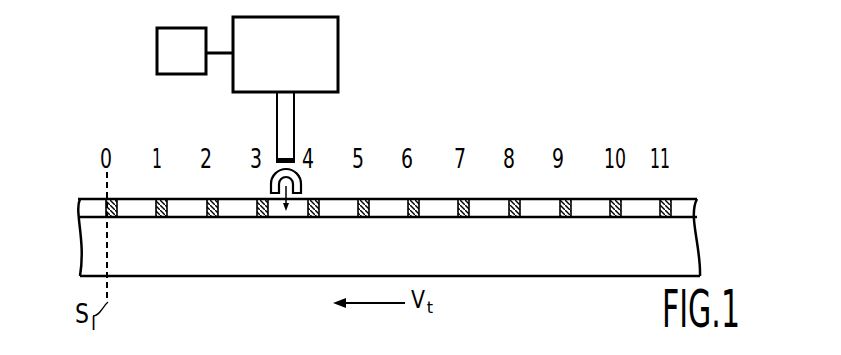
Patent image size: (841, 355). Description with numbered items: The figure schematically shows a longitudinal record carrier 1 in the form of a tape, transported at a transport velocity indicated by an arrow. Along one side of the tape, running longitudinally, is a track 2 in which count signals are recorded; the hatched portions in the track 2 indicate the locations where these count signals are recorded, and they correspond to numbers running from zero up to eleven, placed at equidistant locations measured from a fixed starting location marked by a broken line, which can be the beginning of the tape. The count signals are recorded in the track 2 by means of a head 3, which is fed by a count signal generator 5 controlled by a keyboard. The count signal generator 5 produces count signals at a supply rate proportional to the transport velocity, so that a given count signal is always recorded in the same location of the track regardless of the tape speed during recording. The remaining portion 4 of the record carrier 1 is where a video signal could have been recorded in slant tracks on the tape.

The record carrier 1 is at (315, 277).
The track 2 is at (683, 197).
The head 3 is at (310, 177).
The remaining portion 4 is at (213, 248).
The count signal generator 5 is at (322, 45).